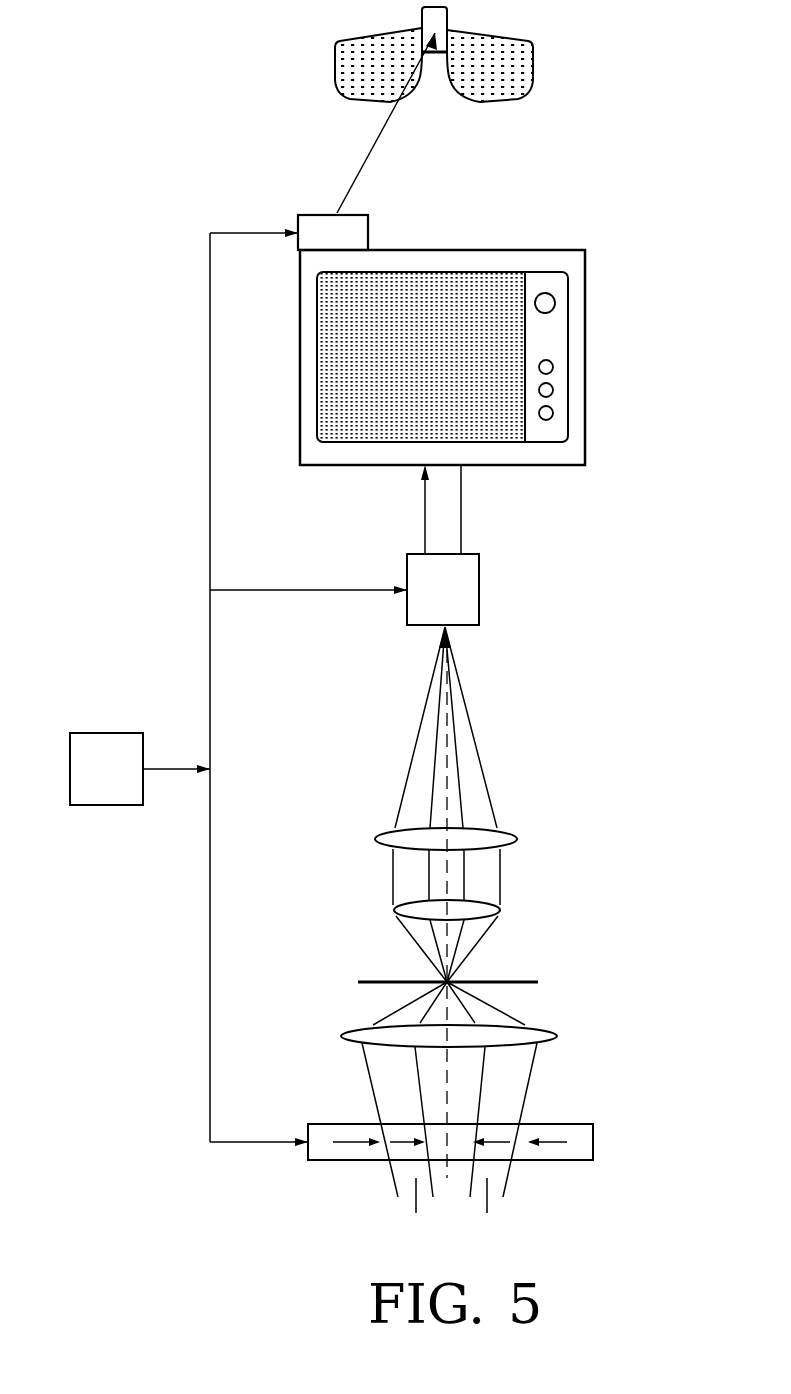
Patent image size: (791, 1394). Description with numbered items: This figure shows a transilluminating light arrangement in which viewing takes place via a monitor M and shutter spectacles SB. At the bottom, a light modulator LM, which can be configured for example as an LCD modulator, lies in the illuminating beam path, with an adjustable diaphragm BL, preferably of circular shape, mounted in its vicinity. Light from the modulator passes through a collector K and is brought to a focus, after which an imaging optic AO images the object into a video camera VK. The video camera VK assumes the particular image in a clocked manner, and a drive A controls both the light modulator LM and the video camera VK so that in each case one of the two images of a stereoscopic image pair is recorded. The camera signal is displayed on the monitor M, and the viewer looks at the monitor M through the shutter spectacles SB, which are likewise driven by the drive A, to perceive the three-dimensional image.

The shutter spectacles SB is at (533, 63).
The monitor M is at (590, 335).
The video camera VK is at (481, 589).
The drive A is at (109, 732).
The imaging optic AO is at (517, 840).
The collector K is at (552, 1034).
The diaphragm BL is at (538, 1089).
The light modulator LM is at (593, 1138).